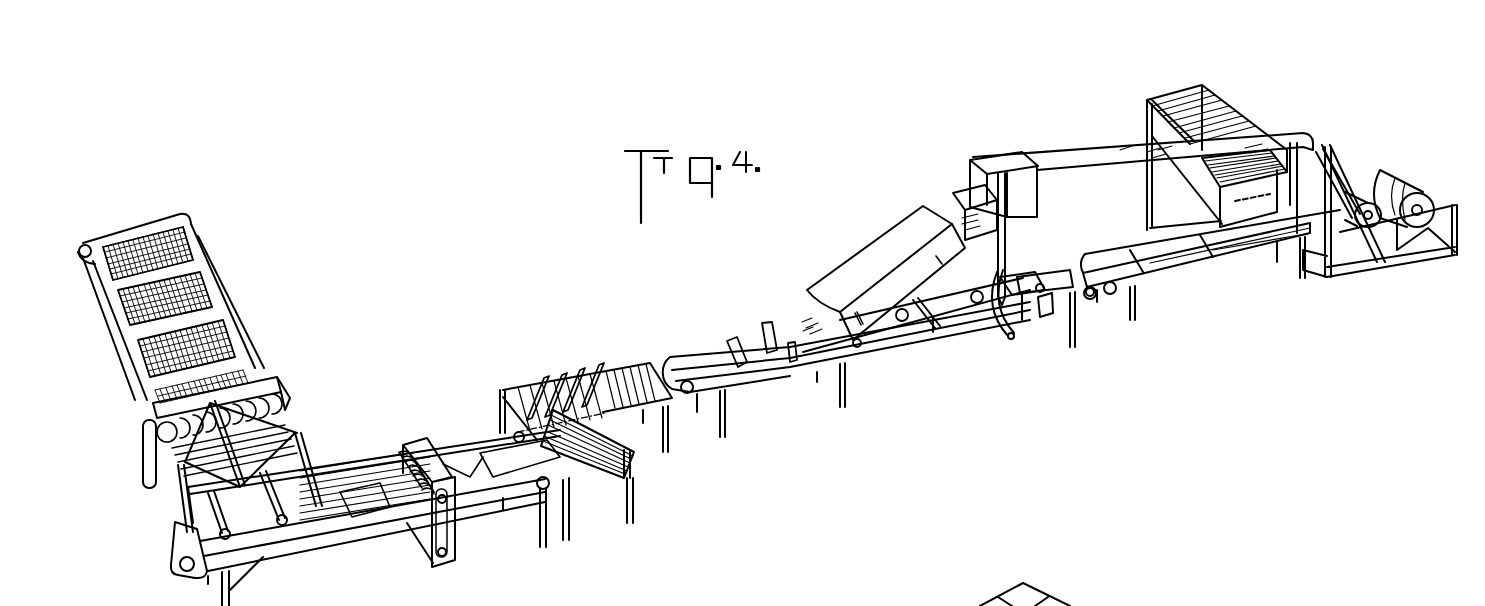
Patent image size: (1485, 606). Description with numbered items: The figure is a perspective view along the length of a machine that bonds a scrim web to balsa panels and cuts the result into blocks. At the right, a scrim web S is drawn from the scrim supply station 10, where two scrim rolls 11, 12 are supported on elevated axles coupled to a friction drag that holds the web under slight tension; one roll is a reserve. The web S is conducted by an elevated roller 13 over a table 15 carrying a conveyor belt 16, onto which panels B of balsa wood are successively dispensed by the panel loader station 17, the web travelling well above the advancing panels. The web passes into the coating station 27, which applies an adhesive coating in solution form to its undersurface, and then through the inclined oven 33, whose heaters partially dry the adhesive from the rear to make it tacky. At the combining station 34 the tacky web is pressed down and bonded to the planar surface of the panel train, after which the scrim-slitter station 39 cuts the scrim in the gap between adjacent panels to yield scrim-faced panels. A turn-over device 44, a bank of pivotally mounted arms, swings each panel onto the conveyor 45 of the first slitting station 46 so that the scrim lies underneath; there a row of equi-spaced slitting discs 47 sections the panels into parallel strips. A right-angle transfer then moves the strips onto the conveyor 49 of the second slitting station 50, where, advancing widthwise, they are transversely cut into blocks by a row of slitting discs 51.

The scrim supply station 10 is at (1398, 157).
The scrim roll 11 is at (1403, 181).
The scrim roll 12 is at (1363, 190).
The elevated roller 13 is at (1328, 147).
The table 15 is at (1215, 264).
The conveyor belt 16 is at (1257, 238).
The panel loader station 17 is at (1178, 87).
The coating station 27 is at (912, 187).
The inclined oven 33 is at (826, 279).
The combining station 34 is at (805, 352).
The scrim-slitter station 39 is at (757, 386).
The turn-over device 44 is at (611, 346).
The conveyor 45 is at (480, 487).
The first slitting station 46 is at (399, 432).
The slitting discs 47 is at (403, 470).
The conveyor 49 is at (214, 292).
The second slitting station 50 is at (282, 358).
The slitting discs 51 is at (275, 404).
The panels B is at (1143, 240).
The scrim web S is at (1280, 140).